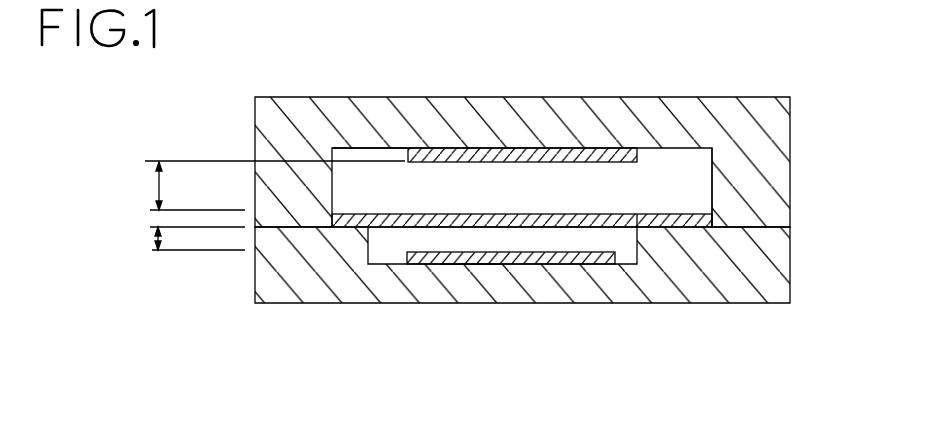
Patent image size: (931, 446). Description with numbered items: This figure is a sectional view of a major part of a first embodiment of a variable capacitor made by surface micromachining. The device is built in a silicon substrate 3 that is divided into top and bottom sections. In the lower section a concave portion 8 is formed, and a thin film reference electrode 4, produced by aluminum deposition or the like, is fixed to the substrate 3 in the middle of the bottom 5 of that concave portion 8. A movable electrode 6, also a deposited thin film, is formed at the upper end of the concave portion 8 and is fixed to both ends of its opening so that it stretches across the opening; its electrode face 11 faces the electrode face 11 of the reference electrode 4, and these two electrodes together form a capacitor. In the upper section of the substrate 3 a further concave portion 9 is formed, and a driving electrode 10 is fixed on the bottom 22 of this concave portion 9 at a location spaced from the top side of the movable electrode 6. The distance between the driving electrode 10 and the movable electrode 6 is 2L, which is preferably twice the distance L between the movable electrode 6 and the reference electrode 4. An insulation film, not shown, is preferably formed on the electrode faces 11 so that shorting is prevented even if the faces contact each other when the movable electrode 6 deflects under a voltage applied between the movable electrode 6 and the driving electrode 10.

The substrate 3 is at (769, 176).
The reference electrode 4 is at (574, 264).
The bottom of the concave portion 5 is at (467, 264).
The movable electrode 6 is at (646, 221).
The concave portion 8 is at (393, 250).
The concave portion 9 is at (673, 168).
The driving electrode 10 is at (590, 150).
The electrode face 11 is at (449, 164).
The bottom of the concave portion 22 is at (362, 148).
The distance between driving electrode and movable electrode 2L is at (256, 185).
The distance between movable electrode and reference electrode L is at (150, 240).